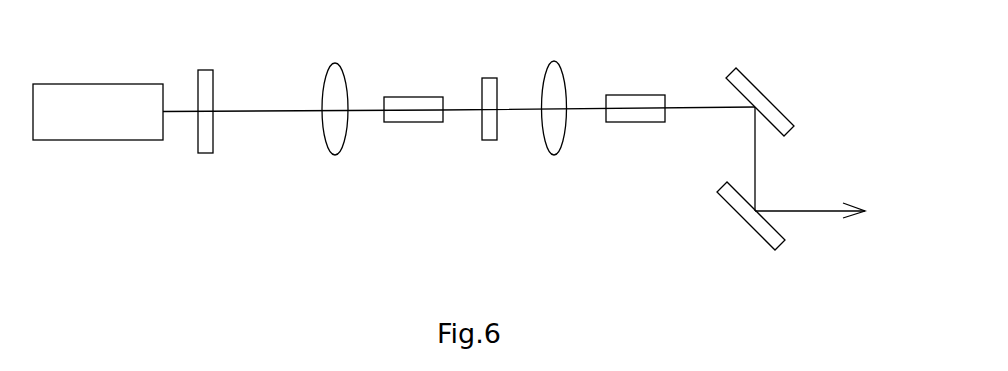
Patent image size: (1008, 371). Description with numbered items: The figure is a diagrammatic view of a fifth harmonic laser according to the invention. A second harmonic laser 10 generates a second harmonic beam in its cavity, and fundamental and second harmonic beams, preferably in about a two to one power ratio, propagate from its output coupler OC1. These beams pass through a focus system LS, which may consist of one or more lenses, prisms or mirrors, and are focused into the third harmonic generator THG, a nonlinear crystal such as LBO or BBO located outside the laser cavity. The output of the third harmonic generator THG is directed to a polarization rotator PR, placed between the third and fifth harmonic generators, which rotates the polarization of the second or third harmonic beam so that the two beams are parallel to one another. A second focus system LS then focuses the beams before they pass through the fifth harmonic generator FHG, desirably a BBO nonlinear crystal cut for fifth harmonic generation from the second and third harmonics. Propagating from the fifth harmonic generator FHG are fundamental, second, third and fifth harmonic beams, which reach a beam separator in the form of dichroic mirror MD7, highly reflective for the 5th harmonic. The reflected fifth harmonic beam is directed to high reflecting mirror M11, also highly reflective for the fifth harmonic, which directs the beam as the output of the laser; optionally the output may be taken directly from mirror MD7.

The second harmonic laser 10 is at (98, 133).
The output coupler OC1 is at (180, 97).
The focus system LS is at (444, 126).
The third harmonic generator THG is at (414, 94).
The polarization rotator PR is at (490, 135).
The fifth harmonic generator FHG is at (635, 94).
The fifth harmonic beam 5th is at (628, 23).
The dichroic mirror MD7 is at (750, 86).
The high reflecting mirror M11 is at (746, 225).